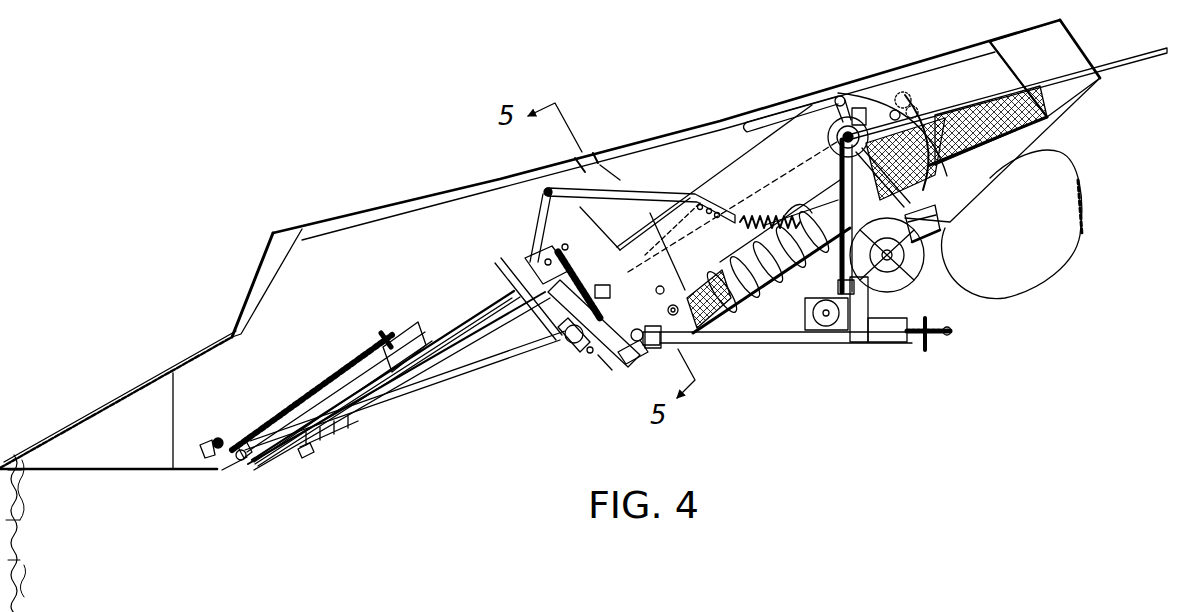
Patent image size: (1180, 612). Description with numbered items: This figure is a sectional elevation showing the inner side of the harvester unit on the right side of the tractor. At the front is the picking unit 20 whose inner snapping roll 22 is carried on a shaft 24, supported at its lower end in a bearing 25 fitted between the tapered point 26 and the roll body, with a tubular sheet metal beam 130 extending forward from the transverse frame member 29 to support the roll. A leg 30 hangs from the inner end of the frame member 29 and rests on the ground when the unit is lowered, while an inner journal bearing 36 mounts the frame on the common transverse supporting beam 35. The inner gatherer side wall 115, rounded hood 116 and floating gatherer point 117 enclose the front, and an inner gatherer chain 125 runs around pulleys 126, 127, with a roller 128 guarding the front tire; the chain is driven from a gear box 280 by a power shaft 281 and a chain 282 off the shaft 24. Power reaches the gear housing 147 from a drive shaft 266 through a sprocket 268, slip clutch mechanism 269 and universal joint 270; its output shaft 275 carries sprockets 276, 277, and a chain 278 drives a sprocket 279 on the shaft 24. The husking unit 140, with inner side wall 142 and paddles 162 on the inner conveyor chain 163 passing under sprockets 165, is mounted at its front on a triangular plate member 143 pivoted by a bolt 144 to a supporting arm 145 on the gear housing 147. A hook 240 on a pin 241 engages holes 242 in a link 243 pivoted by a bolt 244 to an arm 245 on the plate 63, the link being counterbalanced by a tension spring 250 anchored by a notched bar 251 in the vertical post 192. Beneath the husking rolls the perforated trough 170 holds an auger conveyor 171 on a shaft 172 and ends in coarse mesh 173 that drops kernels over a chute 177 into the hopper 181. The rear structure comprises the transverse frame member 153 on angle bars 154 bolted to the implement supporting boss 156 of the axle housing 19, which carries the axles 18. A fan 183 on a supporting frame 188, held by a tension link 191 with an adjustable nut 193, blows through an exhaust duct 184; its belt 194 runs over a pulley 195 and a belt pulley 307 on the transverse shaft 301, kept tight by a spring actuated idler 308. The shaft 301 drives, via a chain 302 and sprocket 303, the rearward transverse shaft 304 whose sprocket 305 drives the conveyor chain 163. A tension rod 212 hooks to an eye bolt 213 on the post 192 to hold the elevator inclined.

The axle 18 is at (826, 327).
The axle housing 19 is at (815, 331).
The picking unit 20 is at (403, 415).
The snapping roll 22 is at (483, 312).
The shaft 24 is at (508, 317).
The bearing 25 is at (344, 430).
The tapered point 26 is at (311, 452).
The frame member 29 is at (556, 305).
The leg 30 is at (614, 356).
The supporting beam 35 is at (562, 338).
The inner journal bearing 36 is at (588, 352).
The plate 63 is at (540, 262).
The side wall 115 is at (338, 240).
The rounded hood 116 is at (249, 291).
The floating gatherer point 117 is at (96, 410).
The inner gatherer chain 125 is at (303, 383).
The pulley 126 is at (217, 440).
The pulley 127 is at (382, 330).
The roller 128 is at (292, 413).
The sheet metal beam 130 is at (443, 368).
The husking unit 140 is at (771, 92).
The side wall 142 is at (648, 161).
The triangular plate member 143 is at (685, 255).
The bolt 144 is at (658, 288).
The supporting arm 145 is at (669, 306).
The gear housing 147 is at (603, 370).
The frame member 153 is at (841, 287).
The angle bar 154 is at (885, 330).
The implement supporting boss 156 is at (858, 312).
The paddle 162 is at (634, 211).
The inner conveyor chain 163 is at (750, 164).
The sprocket 165 is at (705, 282).
The trough 170 is at (745, 298).
The auger conveyor 171 is at (770, 262).
The shaft 172 is at (838, 287).
The coarsely perforated mesh 173 is at (1003, 128).
The chute 177 is at (963, 165).
The hopper 181 is at (1012, 224).
The fan 183 is at (913, 272).
The exhaust duct 184 is at (910, 205).
The supporting frame 188 is at (882, 272).
The tension link 191 is at (932, 222).
The vertical post 192 is at (795, 172).
The adjustable nut 193 is at (932, 232).
The fan driving belt 194 is at (932, 242).
The pulley 195 is at (897, 268).
The tension rod 212 is at (1128, 69).
The eye bolt 213 is at (858, 108).
The hook 240 is at (752, 122).
The pin 241 is at (841, 95).
The hole 242 is at (755, 198).
The link 243 is at (641, 191).
The bolt 244 is at (577, 167).
The arm 245 is at (545, 198).
The tension spring 250 is at (768, 213).
The bar 251 is at (790, 213).
The drive shaft 266 is at (749, 344).
The sprocket 268 is at (928, 350).
The slip clutch mechanism 269 is at (946, 340).
The universal joint 270 is at (651, 352).
The output shaft 275 is at (666, 230).
The sprocket 276 is at (648, 224).
The sprocket 277 is at (601, 288).
The chain 278 is at (583, 268).
The sprocket 279 is at (565, 243).
The gear box 280 is at (395, 355).
The power shaft 281 is at (440, 320).
The chain 282 is at (505, 250).
The transverse shaft 301 is at (836, 138).
The chain 302 is at (890, 90).
The sprocket 303 is at (914, 103).
The transverse shaft 304 is at (905, 90).
The sprocket 305 is at (908, 97).
The belt pulley 307 is at (838, 122).
The spring actuated idler 308 is at (822, 205).